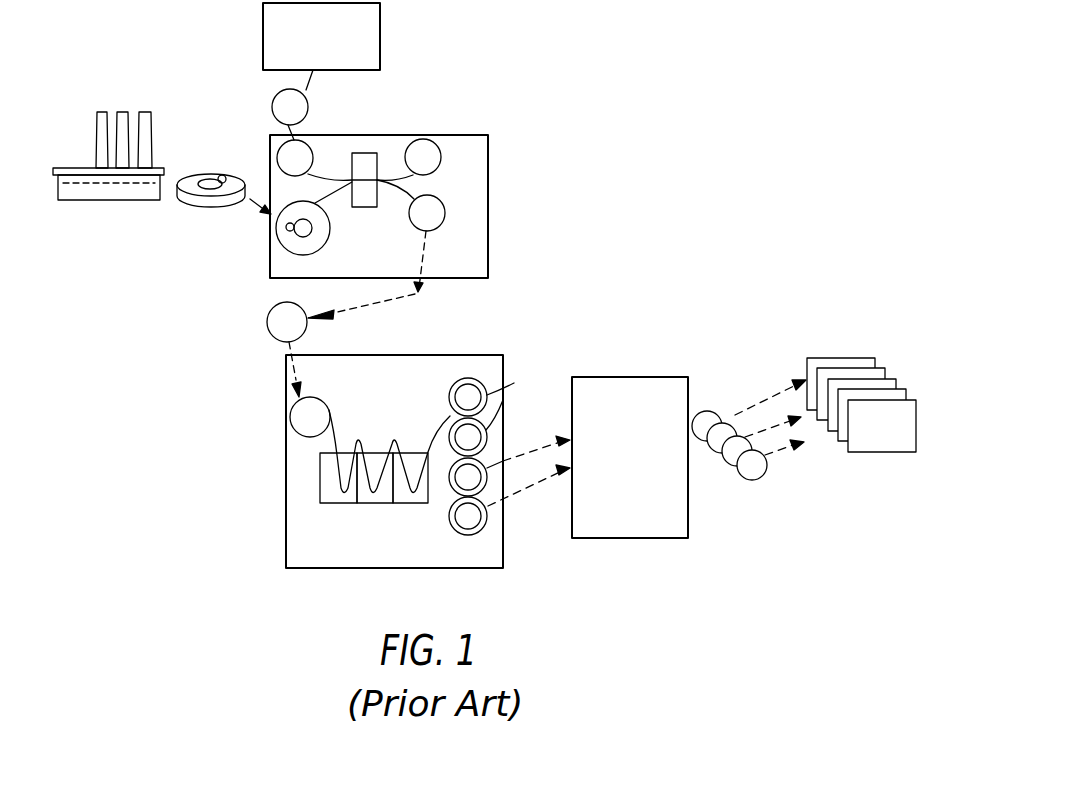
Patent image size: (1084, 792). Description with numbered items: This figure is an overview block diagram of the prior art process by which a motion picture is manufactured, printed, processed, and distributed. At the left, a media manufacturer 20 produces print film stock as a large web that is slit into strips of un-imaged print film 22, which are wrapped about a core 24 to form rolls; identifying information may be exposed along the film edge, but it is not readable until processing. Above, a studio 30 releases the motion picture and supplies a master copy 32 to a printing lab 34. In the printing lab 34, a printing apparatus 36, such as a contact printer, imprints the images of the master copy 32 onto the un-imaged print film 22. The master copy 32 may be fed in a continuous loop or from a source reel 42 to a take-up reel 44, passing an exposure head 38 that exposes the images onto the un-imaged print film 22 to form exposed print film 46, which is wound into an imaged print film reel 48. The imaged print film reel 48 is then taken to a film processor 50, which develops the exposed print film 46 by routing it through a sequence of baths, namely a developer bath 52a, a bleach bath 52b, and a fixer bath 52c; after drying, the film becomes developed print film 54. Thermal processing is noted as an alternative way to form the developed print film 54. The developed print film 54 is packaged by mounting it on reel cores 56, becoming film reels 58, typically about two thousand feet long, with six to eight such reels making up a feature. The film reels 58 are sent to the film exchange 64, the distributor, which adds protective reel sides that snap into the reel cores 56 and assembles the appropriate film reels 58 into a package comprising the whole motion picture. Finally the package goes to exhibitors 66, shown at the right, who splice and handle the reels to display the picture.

The media manufacturer 20 is at (121, 112).
The un-imaged print film 22 is at (209, 208).
The core 24 is at (220, 176).
The studio 30 is at (263, 35).
The master copy 32 is at (312, 140).
The printing lab 34 is at (502, 135).
The printing apparatus 36 is at (488, 195).
The exposure head 38 is at (363, 207).
The source reel 42 is at (277, 150).
The take-up reel 44 is at (440, 140).
The exposed print film 46 is at (413, 192).
The imaged print film reel 48 is at (445, 218).
The film processor 50 is at (465, 355).
The developer bath 52a is at (330, 503).
The bleach bath 52b is at (380, 503).
The fixer bath 52c is at (417, 503).
The developed print film 54 is at (440, 433).
The reel core 56 is at (516, 381).
The film reel 58 is at (451, 387).
The film exchange 64 is at (607, 377).
The exhibitor 66 is at (811, 412).